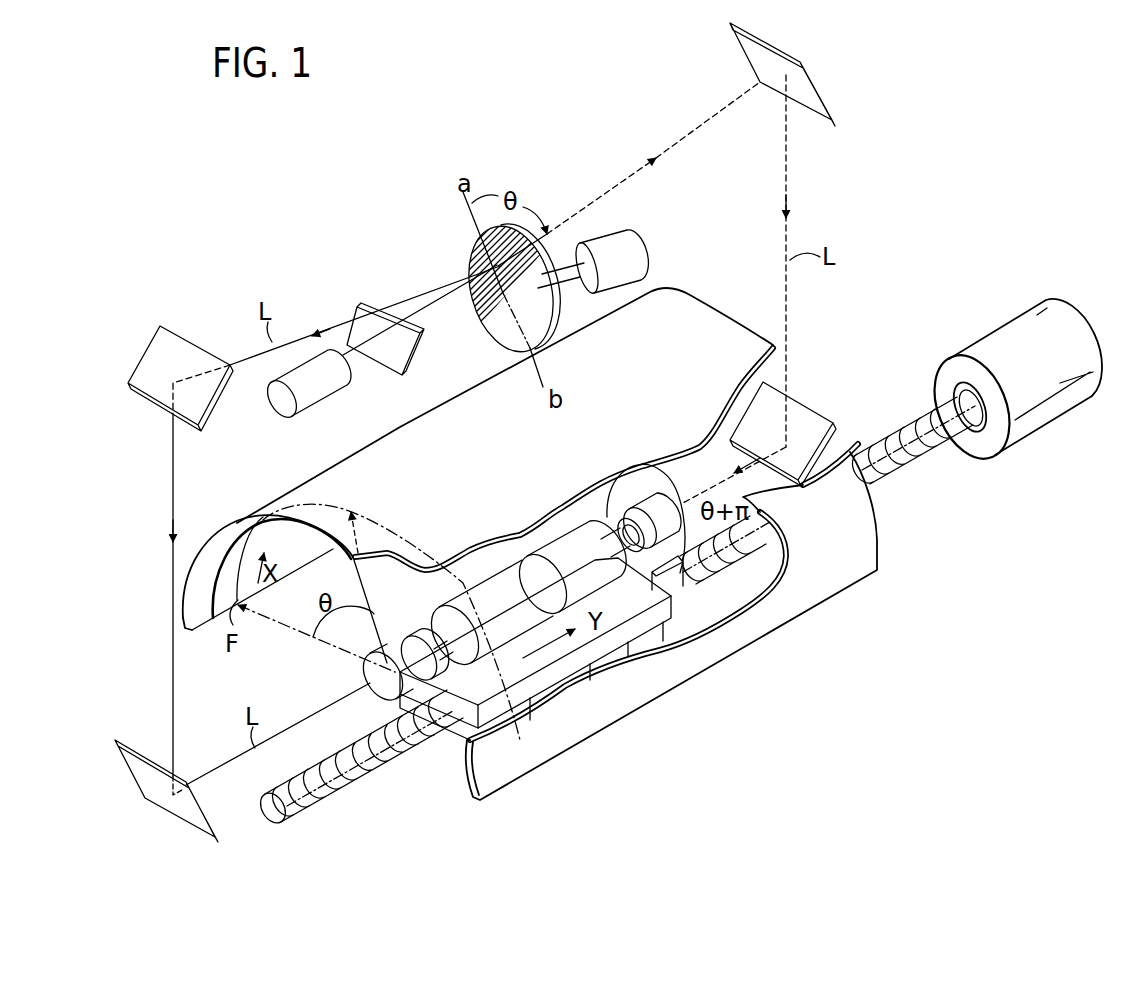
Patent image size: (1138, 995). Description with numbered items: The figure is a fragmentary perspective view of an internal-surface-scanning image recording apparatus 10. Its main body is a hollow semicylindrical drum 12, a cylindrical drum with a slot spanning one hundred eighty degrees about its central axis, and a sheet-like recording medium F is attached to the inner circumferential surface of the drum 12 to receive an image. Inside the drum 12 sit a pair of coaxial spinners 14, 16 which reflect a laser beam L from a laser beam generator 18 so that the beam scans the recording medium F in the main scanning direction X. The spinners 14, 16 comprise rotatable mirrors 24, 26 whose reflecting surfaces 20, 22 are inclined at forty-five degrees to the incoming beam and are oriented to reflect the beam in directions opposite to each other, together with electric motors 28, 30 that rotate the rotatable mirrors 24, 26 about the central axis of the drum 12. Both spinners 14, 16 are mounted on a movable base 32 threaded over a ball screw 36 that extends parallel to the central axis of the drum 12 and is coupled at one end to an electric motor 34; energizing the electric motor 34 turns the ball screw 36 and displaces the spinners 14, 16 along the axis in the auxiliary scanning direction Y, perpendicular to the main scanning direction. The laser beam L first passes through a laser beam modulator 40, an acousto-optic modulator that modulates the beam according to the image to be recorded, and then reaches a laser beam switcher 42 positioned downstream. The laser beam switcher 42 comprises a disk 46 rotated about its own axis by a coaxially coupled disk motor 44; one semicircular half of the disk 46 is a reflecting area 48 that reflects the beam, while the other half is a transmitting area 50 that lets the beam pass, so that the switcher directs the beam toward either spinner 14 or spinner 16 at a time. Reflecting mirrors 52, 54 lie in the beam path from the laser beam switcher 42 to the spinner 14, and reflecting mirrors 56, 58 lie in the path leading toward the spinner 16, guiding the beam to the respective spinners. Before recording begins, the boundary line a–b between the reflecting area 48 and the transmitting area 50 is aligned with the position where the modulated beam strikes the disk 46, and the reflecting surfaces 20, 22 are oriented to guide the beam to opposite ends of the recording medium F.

The internal-surface-scanning image recording apparatus 10 is at (883, 178).
The hollow semicylindrical drum 12 is at (697, 305).
The spinner 14 is at (468, 585).
The spinner 16 is at (538, 548).
The laser beam generator 18 is at (308, 396).
The reflecting surface 20 is at (368, 692).
The reflecting surface 22 is at (682, 503).
The rotatable mirror 24 is at (395, 648).
The rotatable mirror 26 is at (650, 500).
The electric motor 28 is at (495, 592).
The electric motor 30 is at (563, 545).
The movable base 32 is at (465, 724).
The electric motor 34 is at (988, 350).
The ball screw 36 is at (897, 434).
The laser beam modulator 40 is at (362, 303).
The laser beam switcher 42 is at (570, 195).
The disk motor 44 is at (620, 248).
The disk 46 is at (548, 305).
The reflecting area 48 is at (472, 262).
The transmitting area 50 is at (490, 325).
The reflecting mirror 52 is at (195, 352).
The reflecting mirror 54 is at (120, 742).
The reflecting mirror 56 is at (798, 97).
The reflecting mirror 58 is at (798, 418).